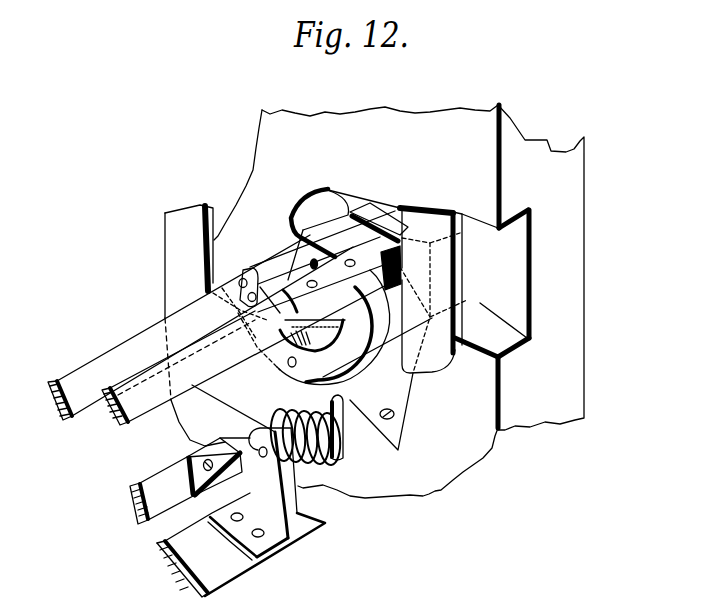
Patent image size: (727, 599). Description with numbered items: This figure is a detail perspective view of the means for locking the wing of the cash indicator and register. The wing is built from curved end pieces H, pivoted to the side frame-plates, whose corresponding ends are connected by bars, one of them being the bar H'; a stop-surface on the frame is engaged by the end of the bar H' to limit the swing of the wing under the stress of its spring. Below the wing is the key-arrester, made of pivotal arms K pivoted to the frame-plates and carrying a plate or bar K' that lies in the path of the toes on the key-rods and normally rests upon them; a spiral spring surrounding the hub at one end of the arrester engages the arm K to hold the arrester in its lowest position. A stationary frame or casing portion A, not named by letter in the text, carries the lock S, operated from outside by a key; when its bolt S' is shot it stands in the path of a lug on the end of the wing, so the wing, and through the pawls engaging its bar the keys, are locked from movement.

The frame plate A is at (374, 301).
The curved end piece H is at (291, 351).
The bar H' is at (246, 358).
The lock S is at (310, 279).
The bolt S' is at (377, 329).
The pivotal arm K is at (265, 512).
The plate or bar K' is at (190, 481).